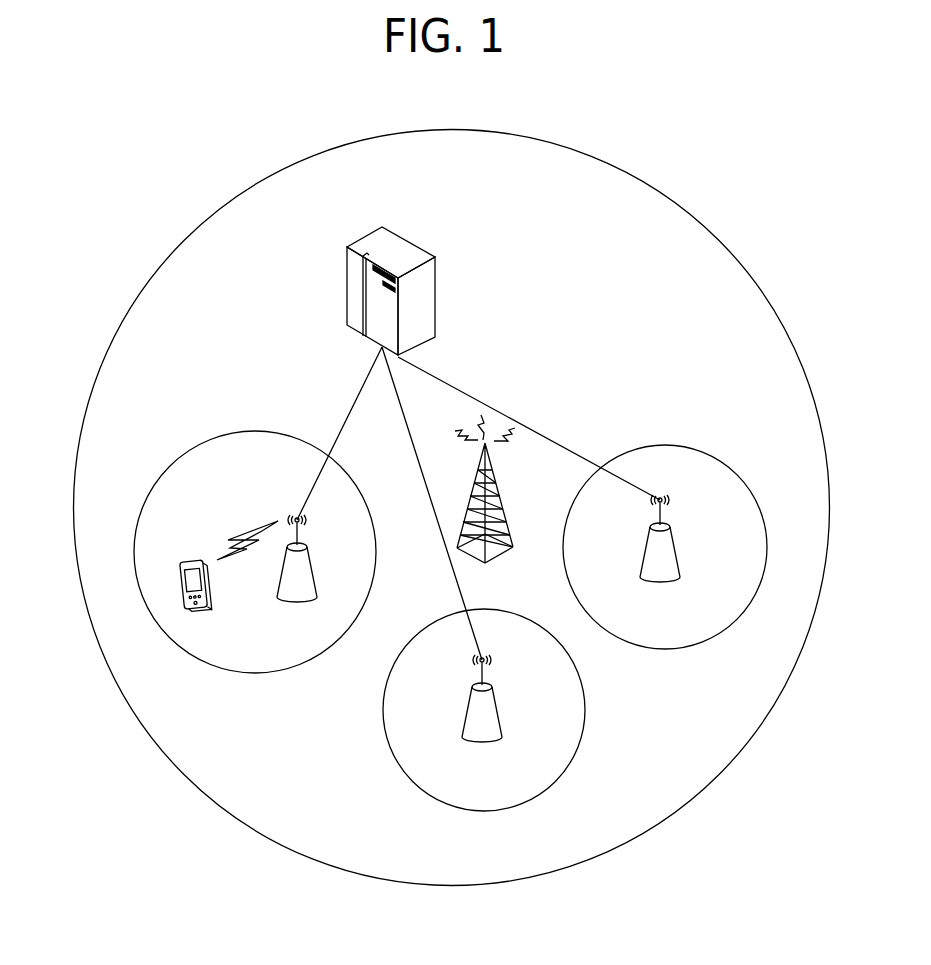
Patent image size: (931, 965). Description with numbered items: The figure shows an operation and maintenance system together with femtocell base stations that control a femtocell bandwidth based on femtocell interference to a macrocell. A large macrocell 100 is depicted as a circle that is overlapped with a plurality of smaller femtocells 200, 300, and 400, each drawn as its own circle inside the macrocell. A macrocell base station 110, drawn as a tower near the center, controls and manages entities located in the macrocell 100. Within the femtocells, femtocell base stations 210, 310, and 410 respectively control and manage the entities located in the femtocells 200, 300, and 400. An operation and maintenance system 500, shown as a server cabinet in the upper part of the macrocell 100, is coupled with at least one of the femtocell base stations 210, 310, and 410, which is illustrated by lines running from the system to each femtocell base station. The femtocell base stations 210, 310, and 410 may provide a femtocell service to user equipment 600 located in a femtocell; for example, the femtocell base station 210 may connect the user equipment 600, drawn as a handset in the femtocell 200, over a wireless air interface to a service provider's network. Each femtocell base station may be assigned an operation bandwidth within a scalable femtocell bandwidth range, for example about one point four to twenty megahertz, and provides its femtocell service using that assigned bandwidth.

The macrocell 100 is at (670, 200).
The macrocell base station 110 is at (507, 507).
The femtocell 200 is at (270, 432).
The femtocell base station 210 is at (311, 556).
The femtocell 300 is at (587, 700).
The femtocell base station 310 is at (497, 708).
The femtocell 400 is at (722, 465).
The femtocell base station 410 is at (673, 540).
The operation and maintenance system 500 is at (398, 236).
The user equipment 600 is at (193, 556).